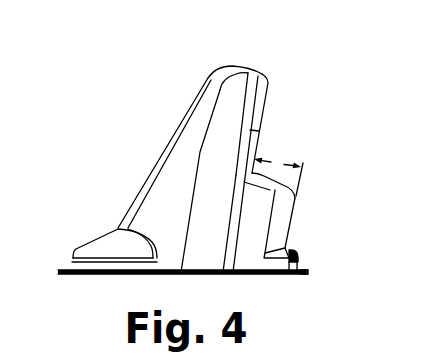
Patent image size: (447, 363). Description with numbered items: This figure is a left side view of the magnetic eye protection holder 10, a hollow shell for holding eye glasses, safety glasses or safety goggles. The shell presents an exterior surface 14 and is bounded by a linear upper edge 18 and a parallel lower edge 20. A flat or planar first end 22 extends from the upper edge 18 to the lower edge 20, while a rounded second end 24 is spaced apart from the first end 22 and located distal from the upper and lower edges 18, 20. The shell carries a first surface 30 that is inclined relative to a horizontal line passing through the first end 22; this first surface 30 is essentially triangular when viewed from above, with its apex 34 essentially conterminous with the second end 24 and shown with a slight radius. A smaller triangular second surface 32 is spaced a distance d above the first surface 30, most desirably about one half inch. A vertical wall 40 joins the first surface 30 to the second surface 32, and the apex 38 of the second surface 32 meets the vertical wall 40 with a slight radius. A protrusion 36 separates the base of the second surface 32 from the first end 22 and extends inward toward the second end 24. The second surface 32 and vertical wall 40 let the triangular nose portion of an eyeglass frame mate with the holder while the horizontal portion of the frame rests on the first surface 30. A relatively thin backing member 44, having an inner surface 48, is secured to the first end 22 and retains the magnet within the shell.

The magnetic eye protection holder 10 is at (304, 58).
The exterior surface 14 is at (264, 110).
The upper edge 18 is at (306, 275).
The lower edge 20 is at (60, 275).
The first end 22 is at (243, 281).
The second end 24 is at (259, 69).
The first surface 30 is at (258, 133).
The second surface 32 is at (290, 225).
The apex 34 is at (270, 82).
The protrusion 36 is at (300, 265).
The apex 38 is at (297, 197).
The vertical wall 40 is at (268, 234).
The backing member 44 is at (270, 275).
The inner surface 48 is at (308, 273).